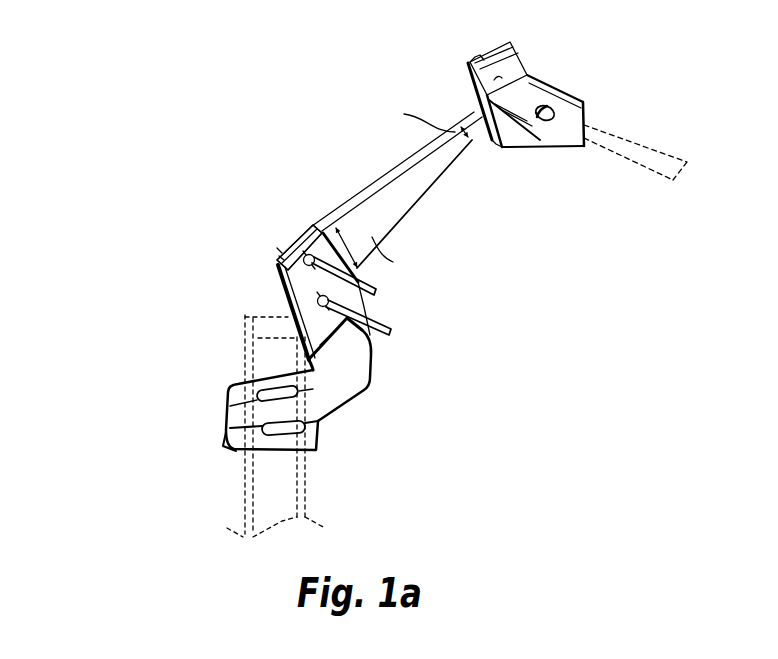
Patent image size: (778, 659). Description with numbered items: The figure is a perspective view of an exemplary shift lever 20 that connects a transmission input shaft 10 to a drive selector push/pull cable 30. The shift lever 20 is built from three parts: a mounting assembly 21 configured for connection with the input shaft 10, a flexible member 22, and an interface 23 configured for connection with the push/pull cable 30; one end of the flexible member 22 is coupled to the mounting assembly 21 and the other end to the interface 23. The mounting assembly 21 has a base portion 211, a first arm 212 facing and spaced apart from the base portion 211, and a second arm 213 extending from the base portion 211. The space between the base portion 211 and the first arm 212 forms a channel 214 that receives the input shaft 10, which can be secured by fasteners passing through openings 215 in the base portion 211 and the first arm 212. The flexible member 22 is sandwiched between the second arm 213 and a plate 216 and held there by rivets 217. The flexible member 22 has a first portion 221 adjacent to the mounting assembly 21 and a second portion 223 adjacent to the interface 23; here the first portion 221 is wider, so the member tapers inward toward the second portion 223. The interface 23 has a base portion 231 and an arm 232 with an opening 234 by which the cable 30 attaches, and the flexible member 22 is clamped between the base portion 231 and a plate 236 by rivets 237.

The transmission input shaft 10 is at (243, 358).
The shift lever 20 is at (180, 53).
The mounting assembly 21 is at (105, 267).
The flexible member 22 is at (286, 155).
The interface 23 is at (385, 27).
The drive selector push/pull cable 30 is at (645, 143).
The base portion 211 is at (353, 378).
The first arm 212 is at (318, 450).
The second arm 213 is at (294, 318).
The channel 214 is at (232, 454).
The openings 215 is at (303, 432).
The plate 216 is at (277, 270).
The rivets 217 is at (377, 335).
The first portion 221 is at (312, 222).
The second portion 223 is at (467, 108).
The base portion 231 is at (527, 100).
The arm 232 is at (493, 144).
The opening 234 is at (545, 145).
The plate 236 is at (487, 52).
The rivets 237 is at (553, 93).